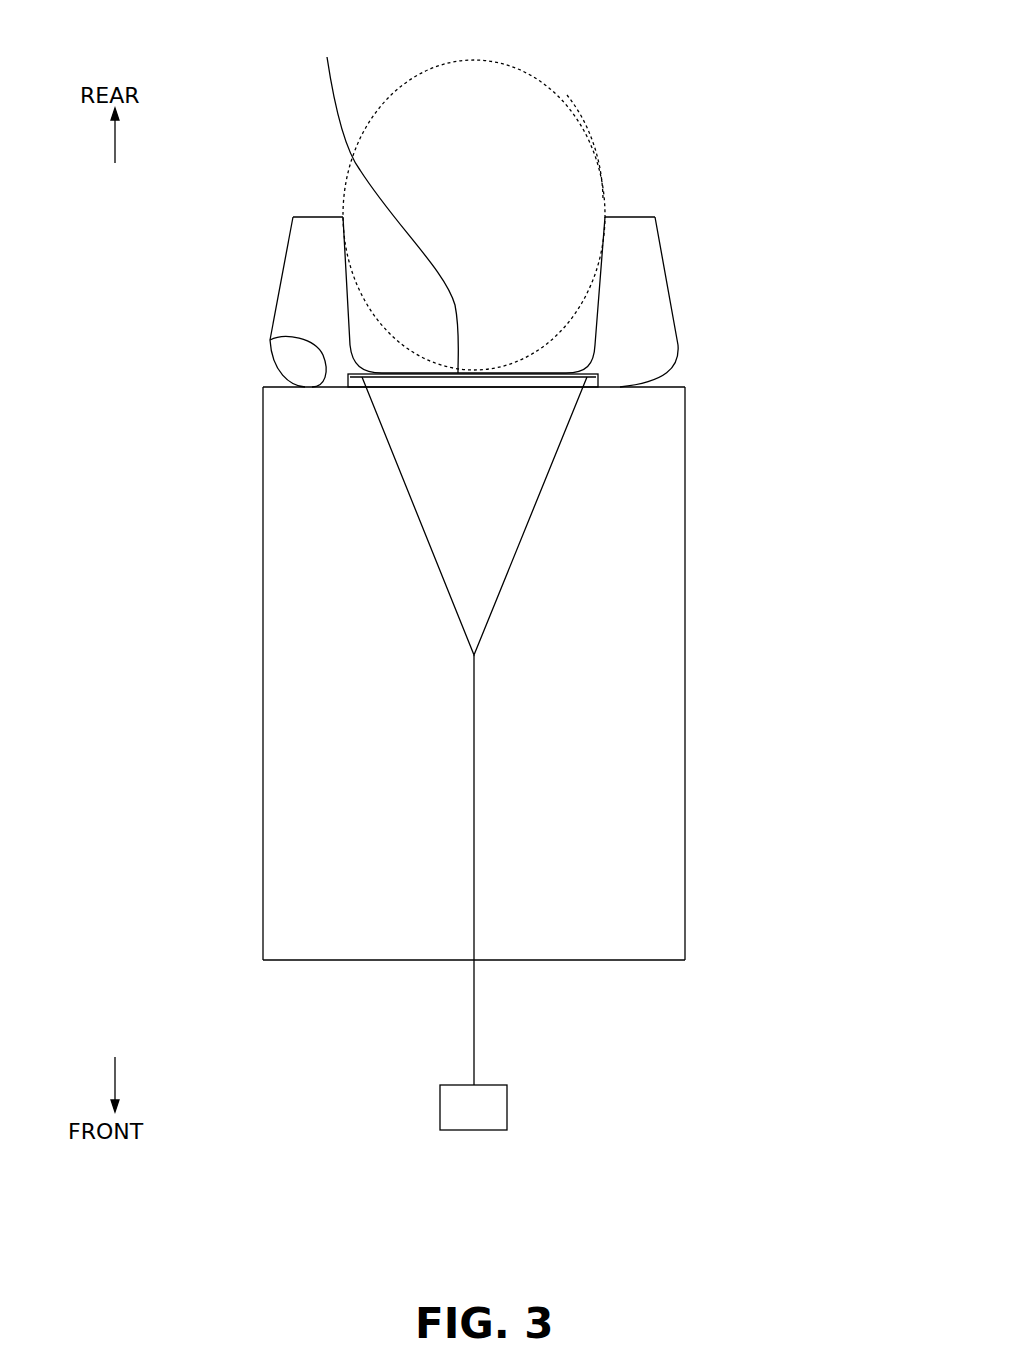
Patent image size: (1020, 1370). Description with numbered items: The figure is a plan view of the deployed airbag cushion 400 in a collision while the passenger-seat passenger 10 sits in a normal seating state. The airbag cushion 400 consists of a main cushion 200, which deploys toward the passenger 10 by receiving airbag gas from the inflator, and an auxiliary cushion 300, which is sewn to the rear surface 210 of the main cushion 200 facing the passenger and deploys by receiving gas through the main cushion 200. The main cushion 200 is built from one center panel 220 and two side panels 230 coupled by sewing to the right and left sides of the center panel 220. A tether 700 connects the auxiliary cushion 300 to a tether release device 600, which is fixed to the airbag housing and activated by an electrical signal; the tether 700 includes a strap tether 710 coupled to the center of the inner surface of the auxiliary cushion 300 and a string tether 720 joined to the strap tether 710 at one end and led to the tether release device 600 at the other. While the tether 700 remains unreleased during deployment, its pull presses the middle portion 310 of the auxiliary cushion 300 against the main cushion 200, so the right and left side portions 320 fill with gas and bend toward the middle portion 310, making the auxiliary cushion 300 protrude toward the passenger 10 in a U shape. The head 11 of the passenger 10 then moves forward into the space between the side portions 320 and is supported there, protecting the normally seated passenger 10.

The passenger-seat passenger 10 is at (564, 90).
The head 11 is at (594, 157).
The main cushion 200 is at (474, 717).
The rear surface 210 is at (270, 341).
The center panel 220 is at (348, 947).
The side panels 230 is at (263, 773).
The auxiliary cushion 300 is at (486, 209).
The middle portion 310 is at (380, 202).
The right and left side portions 320 is at (313, 242).
The airbag cushion 400 is at (238, 679).
The tether release device 600 is at (507, 1110).
The tether 700 is at (466, 731).
The strap tether 710 is at (540, 502).
The string tether 720 is at (475, 1045).